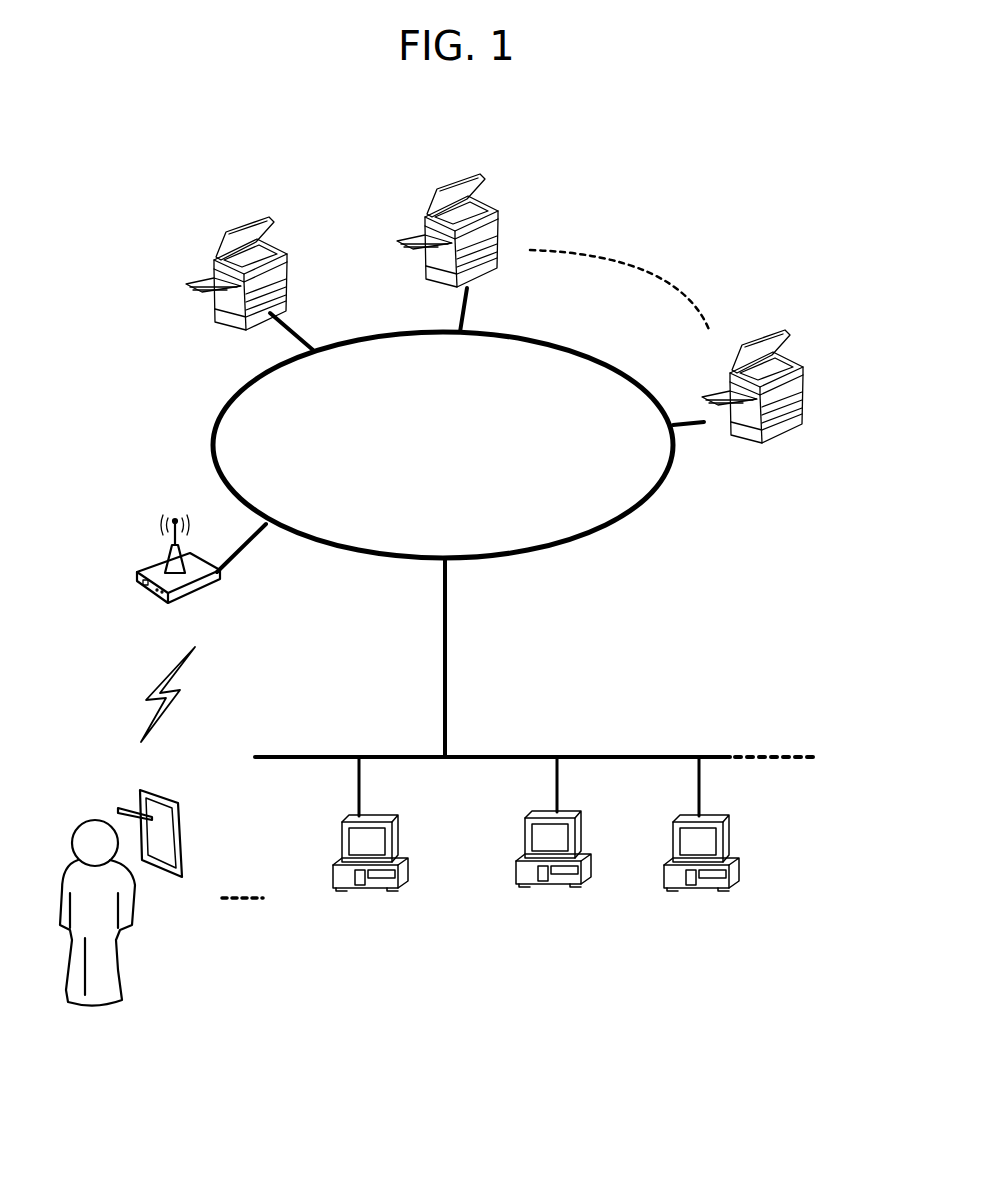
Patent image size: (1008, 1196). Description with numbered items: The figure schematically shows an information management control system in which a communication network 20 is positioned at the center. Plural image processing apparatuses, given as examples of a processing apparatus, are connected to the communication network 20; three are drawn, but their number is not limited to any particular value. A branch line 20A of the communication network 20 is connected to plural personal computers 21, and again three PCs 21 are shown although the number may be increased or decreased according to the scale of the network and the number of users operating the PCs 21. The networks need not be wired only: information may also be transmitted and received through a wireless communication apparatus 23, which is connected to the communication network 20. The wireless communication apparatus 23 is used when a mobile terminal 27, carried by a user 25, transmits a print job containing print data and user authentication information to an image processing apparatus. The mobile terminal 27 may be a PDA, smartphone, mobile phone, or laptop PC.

The communication network 20 is at (413, 558).
The branch line 20A is at (328, 757).
The personal computer 21 is at (402, 841).
The wireless communication apparatus 23 is at (205, 556).
The user 25 is at (90, 822).
The mobile terminal 27 is at (184, 818).